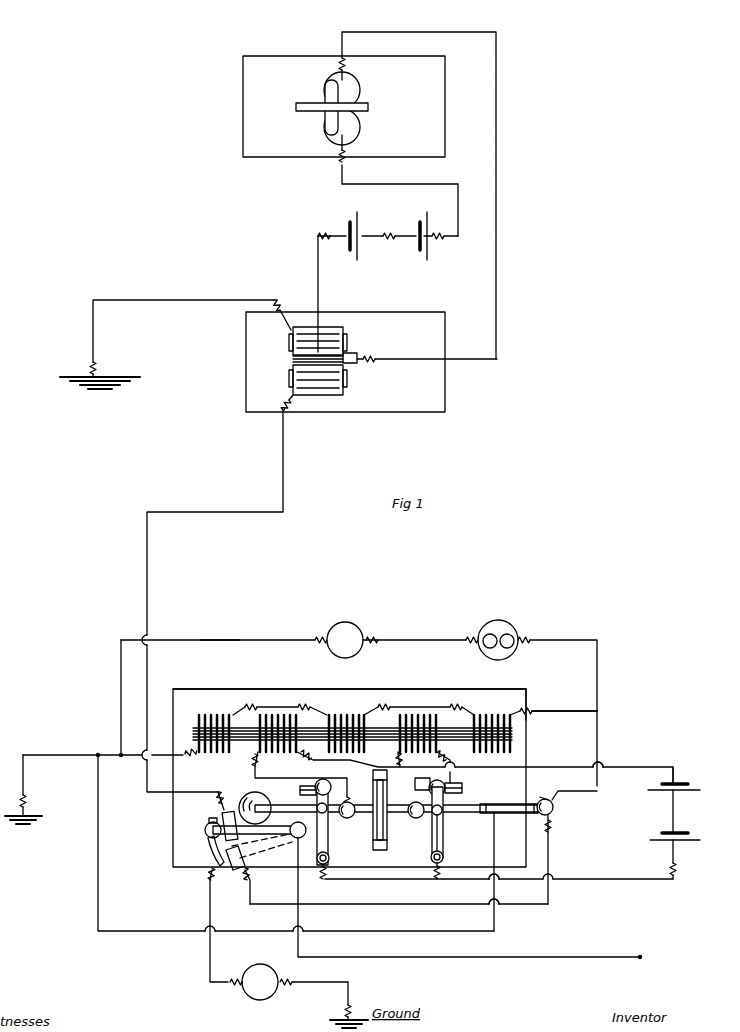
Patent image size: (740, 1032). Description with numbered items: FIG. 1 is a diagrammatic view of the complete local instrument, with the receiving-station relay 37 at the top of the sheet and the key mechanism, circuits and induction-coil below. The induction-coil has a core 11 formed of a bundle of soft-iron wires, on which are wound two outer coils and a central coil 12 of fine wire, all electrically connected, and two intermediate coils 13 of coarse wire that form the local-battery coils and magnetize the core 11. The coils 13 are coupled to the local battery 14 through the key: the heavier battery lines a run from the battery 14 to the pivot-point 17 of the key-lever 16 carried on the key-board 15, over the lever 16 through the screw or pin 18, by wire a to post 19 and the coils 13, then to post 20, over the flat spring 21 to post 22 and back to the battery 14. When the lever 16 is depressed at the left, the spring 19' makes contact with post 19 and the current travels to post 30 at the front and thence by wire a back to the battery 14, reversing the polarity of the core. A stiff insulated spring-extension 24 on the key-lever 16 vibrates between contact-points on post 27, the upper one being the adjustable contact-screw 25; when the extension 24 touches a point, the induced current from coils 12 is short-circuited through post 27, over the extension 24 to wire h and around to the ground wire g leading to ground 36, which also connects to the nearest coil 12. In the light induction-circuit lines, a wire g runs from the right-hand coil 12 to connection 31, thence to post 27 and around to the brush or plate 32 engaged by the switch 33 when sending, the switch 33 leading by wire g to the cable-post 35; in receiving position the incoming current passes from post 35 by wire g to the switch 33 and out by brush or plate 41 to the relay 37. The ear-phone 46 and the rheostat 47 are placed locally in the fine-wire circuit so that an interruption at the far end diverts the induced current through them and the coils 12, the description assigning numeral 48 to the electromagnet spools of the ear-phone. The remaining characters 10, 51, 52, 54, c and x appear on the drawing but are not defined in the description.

The casing 10 is at (380, 703).
The core 11 is at (320, 724).
The fine-wire induction coils 12 is at (219, 706).
The local-battery coils 13 is at (270, 724).
The battery 14 is at (674, 833).
The key-board 15 is at (528, 702).
The key-lever 16 is at (367, 814).
The pivot-point 17 is at (388, 822).
The screw or pin 18 is at (416, 818).
The post 19 is at (448, 818).
The spring 19' is at (456, 832).
The post 20 is at (298, 791).
The flat spring 21 is at (326, 831).
The post 22 is at (331, 858).
The spring-extension 24 is at (510, 814).
The upper contact-point 25 is at (545, 797).
The post 27 is at (555, 812).
The post 30 is at (450, 864).
The connection 31 is at (600, 712).
The brush or plate 32 is at (232, 872).
The switch 33 is at (270, 842).
The cable-post 35 is at (481, 903).
The ground 36 is at (26, 789).
The relay 37 is at (352, 393).
The brush or plate 41 is at (228, 817).
The ear-phone 46 is at (487, 698).
The rheostat 47 is at (360, 643).
The spools or electro-magnets 48 is at (262, 964).
The collar 51 is at (322, 812).
The contact 52 is at (462, 795).
The pivot 54 is at (294, 840).
The battery-current wire a is at (297, 778).
The pivot c is at (380, 780).
The induction-circuit wire g is at (52, 758).
The wire h is at (494, 845).
The conductor x is at (230, 632).